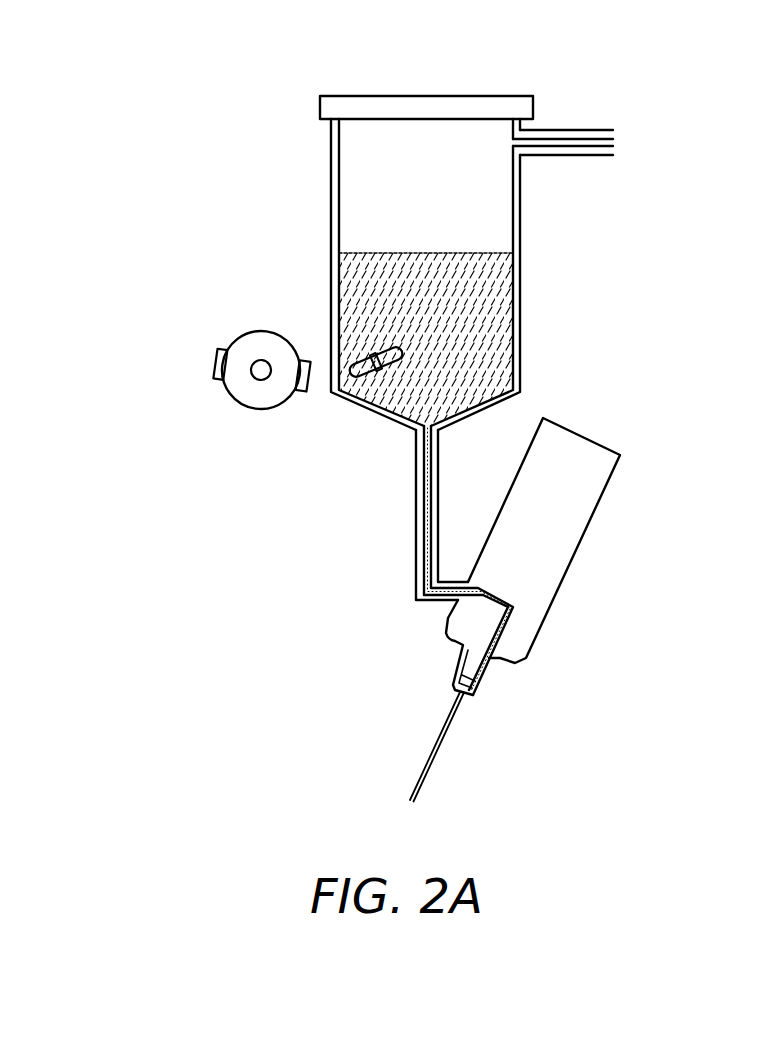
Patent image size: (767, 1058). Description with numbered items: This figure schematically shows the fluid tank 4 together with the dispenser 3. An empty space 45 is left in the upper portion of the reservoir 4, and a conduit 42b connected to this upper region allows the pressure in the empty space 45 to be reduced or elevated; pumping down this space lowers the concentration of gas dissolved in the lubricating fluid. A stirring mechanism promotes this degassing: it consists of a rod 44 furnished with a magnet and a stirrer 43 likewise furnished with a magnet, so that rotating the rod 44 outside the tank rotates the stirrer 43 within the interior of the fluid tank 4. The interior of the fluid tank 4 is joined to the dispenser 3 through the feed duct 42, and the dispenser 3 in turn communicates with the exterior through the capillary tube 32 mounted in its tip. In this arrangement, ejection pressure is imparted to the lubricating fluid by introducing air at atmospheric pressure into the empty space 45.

The dispenser 3 is at (578, 681).
The capillary tube 32 is at (450, 753).
The fluid tank 4 is at (257, 226).
The feed duct 42 is at (407, 525).
The conduit 42b is at (567, 125).
The stirrer 43 is at (372, 383).
The rod 44 is at (222, 327).
The empty space 45 is at (452, 217).